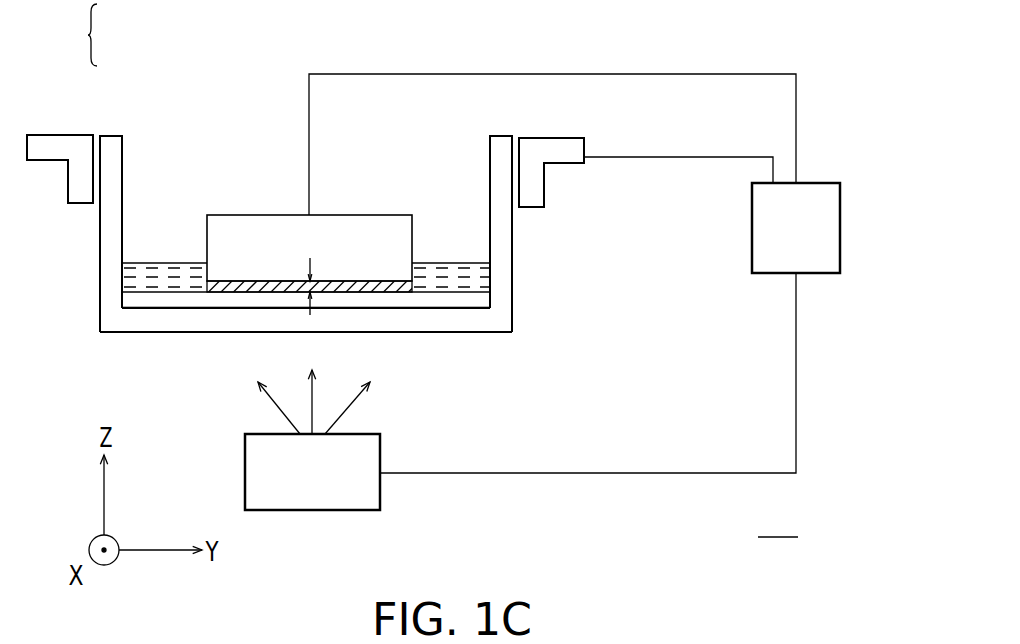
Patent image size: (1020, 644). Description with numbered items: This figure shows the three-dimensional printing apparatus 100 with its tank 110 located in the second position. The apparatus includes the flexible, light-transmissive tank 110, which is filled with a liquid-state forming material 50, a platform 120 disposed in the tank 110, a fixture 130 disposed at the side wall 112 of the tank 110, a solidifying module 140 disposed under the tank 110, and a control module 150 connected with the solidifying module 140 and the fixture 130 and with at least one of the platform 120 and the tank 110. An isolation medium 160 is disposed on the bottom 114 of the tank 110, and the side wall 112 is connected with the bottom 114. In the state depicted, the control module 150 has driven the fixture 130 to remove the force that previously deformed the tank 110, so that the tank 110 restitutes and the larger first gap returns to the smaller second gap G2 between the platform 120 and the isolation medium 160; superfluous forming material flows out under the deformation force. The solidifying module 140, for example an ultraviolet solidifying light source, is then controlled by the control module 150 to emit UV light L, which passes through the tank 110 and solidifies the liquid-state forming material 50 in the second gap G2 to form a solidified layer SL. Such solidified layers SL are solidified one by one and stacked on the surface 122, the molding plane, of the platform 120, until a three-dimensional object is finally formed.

The three-dimensional printing apparatus 100 is at (439, 291).
The tank 110 is at (322, 188).
The side wall 112 is at (553, 257).
The bottom 114 is at (508, 362).
The platform 120 is at (243, 223).
The surface 122 is at (446, 283).
The fixture 130 is at (578, 150).
The solidifying module 140 is at (312, 513).
The control module 150 is at (818, 275).
The isolation medium 160 is at (142, 299).
The liquid-state forming material 50 is at (140, 274).
The solidified layer SL is at (283, 290).
The second gap G2 is at (314, 290).
The UV light L is at (355, 402).